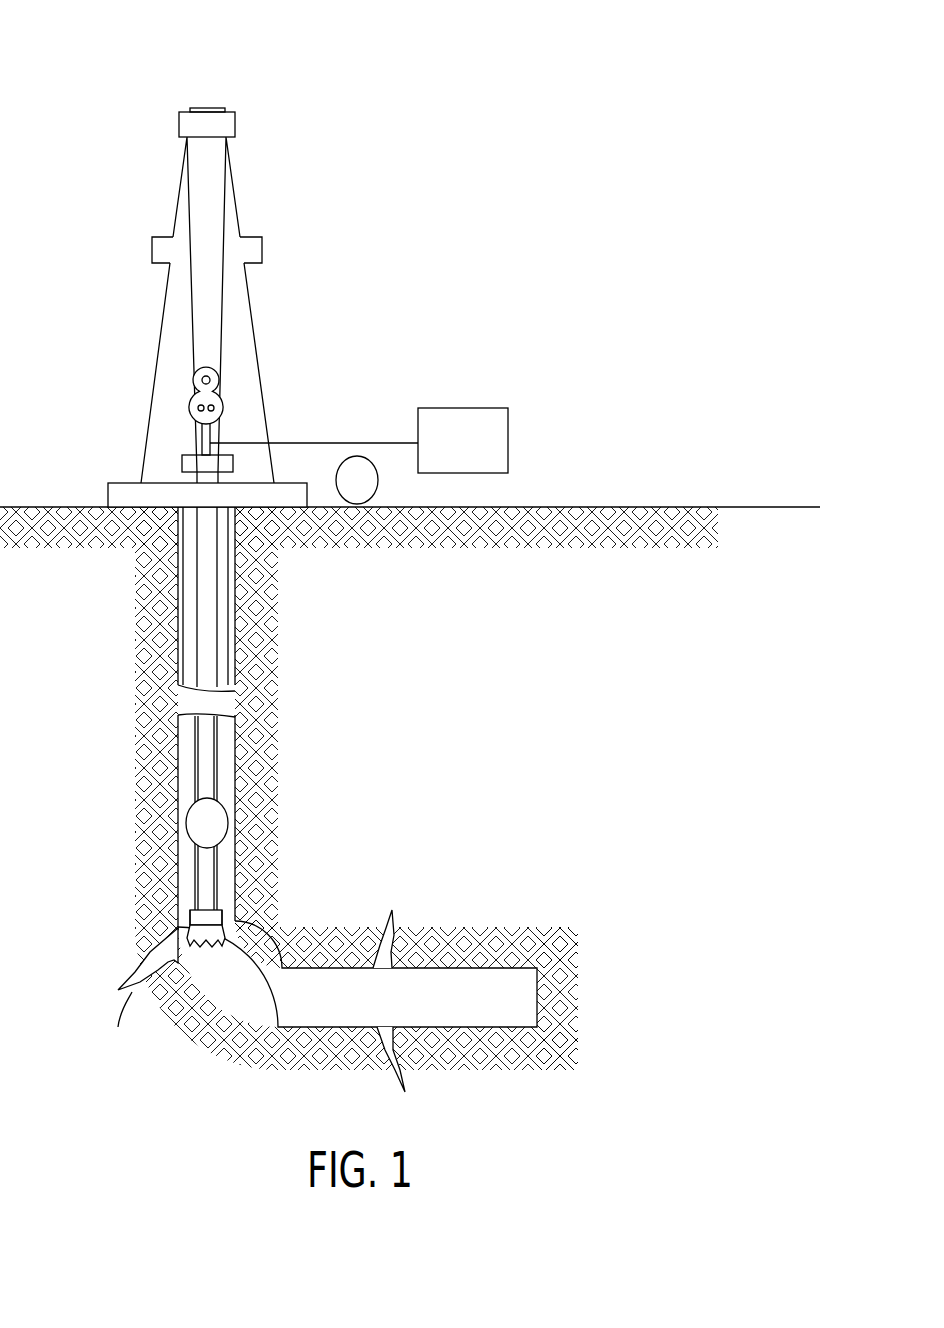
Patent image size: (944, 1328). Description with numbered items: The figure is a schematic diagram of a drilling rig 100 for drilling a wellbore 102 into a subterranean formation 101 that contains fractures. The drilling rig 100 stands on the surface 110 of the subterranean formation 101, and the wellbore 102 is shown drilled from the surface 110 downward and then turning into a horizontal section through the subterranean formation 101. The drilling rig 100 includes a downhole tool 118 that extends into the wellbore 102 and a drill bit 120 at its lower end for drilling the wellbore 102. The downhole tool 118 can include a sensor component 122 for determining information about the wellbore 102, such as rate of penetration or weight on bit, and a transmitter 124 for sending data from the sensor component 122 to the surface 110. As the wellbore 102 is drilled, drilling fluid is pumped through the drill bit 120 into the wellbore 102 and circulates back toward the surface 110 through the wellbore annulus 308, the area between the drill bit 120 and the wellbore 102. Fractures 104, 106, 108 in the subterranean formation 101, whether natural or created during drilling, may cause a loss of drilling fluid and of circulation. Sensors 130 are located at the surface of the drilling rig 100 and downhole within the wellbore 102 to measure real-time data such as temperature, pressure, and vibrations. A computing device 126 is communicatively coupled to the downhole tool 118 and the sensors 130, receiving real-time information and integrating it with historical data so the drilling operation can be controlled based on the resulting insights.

The drilling rig 100 is at (93, 77).
The subterranean formation 101 is at (143, 813).
The wellbore 102 is at (238, 786).
The fracture 104 is at (141, 998).
The fracture 106 is at (397, 924).
The fracture 108 is at (405, 1075).
The surface 110 is at (541, 492).
The downhole tool 118 is at (225, 645).
The drill bit 120 is at (188, 933).
The sensor component 122 is at (223, 923).
The transmitter 124 is at (190, 912).
The computing device 126 is at (465, 408).
The sensors 130 is at (365, 505).
The wellbore annulus 308 is at (183, 787).